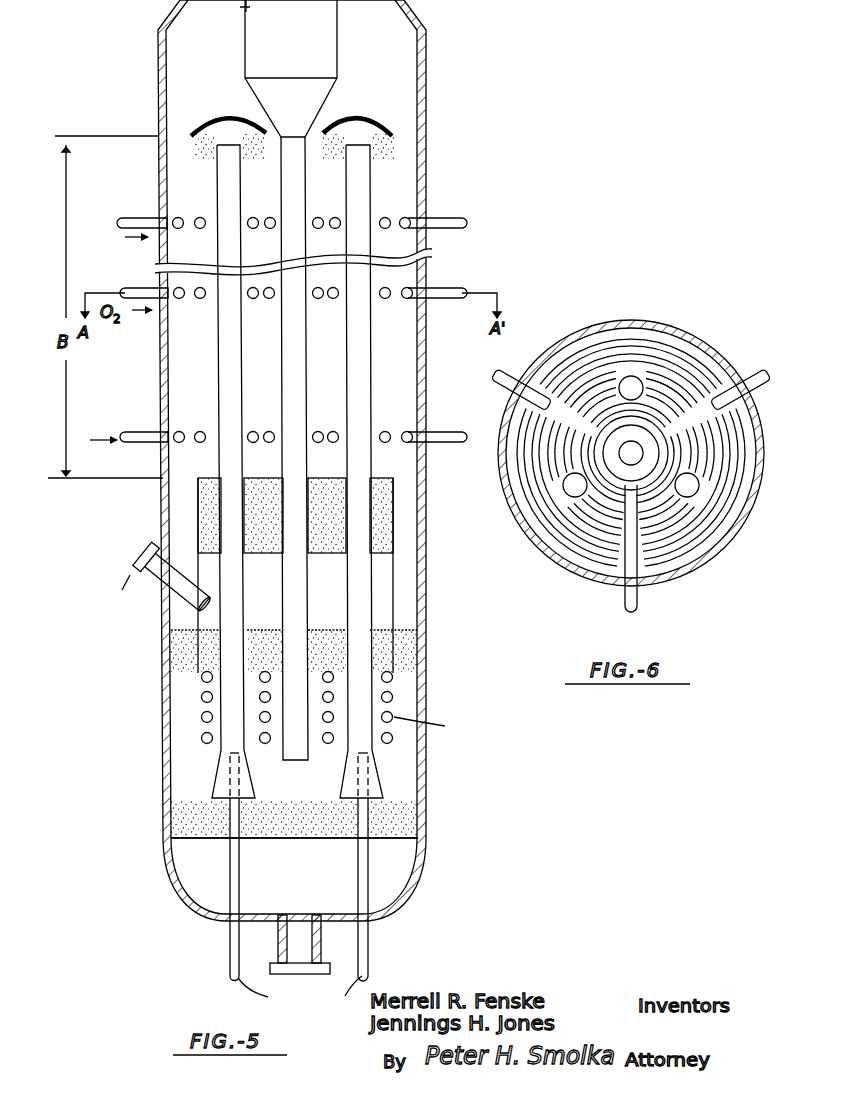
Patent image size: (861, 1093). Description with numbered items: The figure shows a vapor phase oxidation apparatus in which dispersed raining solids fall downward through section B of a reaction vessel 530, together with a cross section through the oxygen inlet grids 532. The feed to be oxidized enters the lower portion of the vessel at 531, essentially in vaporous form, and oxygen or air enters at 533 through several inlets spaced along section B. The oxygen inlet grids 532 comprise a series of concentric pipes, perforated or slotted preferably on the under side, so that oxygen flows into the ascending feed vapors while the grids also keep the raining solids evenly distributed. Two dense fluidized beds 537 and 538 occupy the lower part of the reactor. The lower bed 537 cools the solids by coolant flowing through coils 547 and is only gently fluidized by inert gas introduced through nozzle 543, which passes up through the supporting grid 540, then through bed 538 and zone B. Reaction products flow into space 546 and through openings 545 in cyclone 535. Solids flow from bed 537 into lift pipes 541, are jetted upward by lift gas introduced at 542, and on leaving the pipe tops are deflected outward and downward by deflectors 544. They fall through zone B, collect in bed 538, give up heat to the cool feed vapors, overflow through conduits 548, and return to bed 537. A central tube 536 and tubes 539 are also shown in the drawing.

In FIG. 5, the reaction vessel 530 is at (160, 467).
In FIG. 6, the reaction vessel 530 is at (680, 330).
In FIG. 5, the feed inlet 531 is at (133, 562).
In FIG. 5, the oxygen inlet grids 532 is at (418, 222).
In FIG. 6, the oxygen inlet grids 532 is at (652, 497).
In FIG. 5, the oxygen inlets 533 is at (157, 218).
In FIG. 6, the oxygen inlets 533 is at (516, 366).
In FIG. 5, the cyclone 535 is at (337, 54).
In FIG. 5, the central tube 536 is at (308, 602).
In FIG. 6, the central tube 536 is at (640, 456).
In FIG. 5, the lower dense fluidized bed 537 is at (416, 643).
In FIG. 5, the upper dense fluidized bed 538 is at (385, 516).
In FIG. 5, the thin tubes 539 is at (396, 556).
In FIG. 5, the grid 540 is at (420, 843).
In FIG. 5, the lift pipes 541 is at (245, 631).
In FIG. 6, the lift pipes 541 is at (628, 377).
In FIG. 5, the lift gas inlet 542 is at (228, 950).
In FIG. 5, the nozzle 543 is at (274, 954).
In FIG. 5, the deflectors 544 is at (199, 131).
In FIG. 5, the openings 545 is at (240, 7).
In FIG. 5, the space 546 is at (207, 59).
In FIG. 5, the cooling coils 547 is at (393, 697).
In FIG. 5, the conduits 548 is at (185, 492).